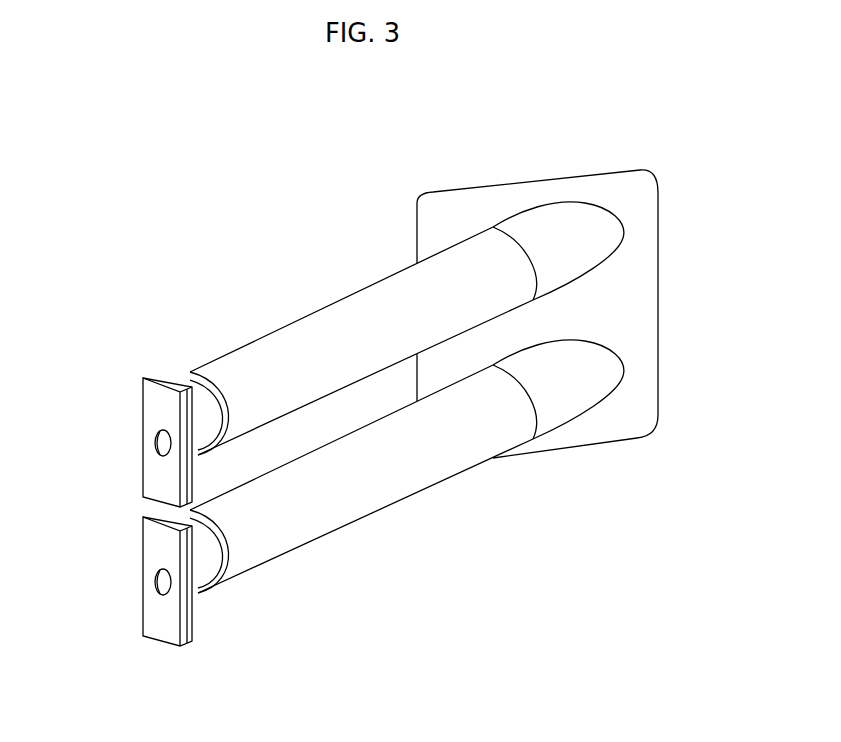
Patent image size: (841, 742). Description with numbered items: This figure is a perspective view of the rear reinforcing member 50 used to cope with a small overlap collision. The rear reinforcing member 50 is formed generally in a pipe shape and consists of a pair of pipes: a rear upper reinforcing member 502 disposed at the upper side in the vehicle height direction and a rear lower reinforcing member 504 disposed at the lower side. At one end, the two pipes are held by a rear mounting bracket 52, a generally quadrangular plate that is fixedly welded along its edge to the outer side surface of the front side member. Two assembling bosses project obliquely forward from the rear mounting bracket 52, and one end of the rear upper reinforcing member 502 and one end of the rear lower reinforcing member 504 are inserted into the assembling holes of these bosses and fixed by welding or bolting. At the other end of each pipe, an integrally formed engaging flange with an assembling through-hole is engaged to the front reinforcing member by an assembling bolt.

The rear reinforcing member 50 is at (407, 391).
The rear upper reinforcing member 502 is at (407, 379).
The rear lower reinforcing member 504 is at (407, 471).
The rear mounting bracket 52 is at (648, 308).